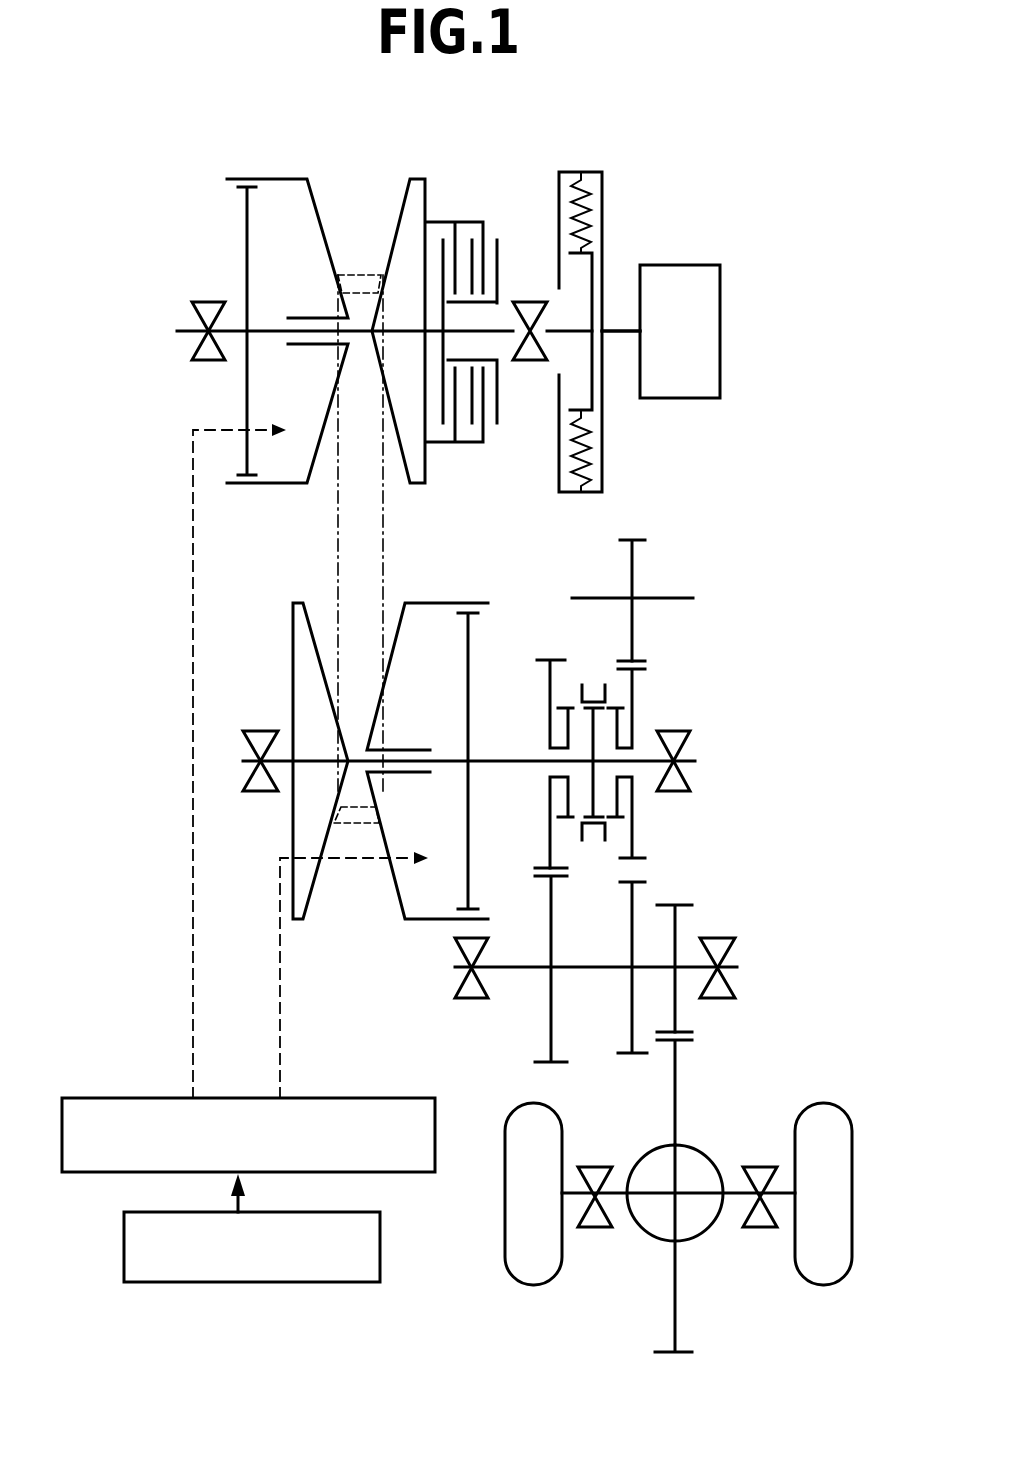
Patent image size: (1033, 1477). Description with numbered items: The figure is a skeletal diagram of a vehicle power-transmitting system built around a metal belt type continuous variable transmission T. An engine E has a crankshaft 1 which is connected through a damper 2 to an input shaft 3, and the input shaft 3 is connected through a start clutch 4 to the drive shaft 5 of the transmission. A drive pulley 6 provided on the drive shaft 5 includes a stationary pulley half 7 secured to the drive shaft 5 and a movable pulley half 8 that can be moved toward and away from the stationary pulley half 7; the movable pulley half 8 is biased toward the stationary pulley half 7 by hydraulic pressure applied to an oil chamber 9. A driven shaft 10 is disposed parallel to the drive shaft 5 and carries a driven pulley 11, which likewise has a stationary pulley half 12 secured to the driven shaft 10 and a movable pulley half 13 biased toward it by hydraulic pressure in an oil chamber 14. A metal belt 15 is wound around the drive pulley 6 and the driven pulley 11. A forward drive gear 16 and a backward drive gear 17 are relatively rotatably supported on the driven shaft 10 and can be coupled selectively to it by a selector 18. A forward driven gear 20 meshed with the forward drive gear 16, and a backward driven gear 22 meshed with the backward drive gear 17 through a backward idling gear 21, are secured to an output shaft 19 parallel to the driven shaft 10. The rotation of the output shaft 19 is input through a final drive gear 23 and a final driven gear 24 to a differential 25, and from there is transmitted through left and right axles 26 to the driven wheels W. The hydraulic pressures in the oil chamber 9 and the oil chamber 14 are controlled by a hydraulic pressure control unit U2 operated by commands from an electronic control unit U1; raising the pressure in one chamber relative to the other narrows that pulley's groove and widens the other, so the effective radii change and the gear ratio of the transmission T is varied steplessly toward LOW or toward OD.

The crankshaft 1 is at (617, 335).
The damper 2 is at (608, 218).
The input shaft 3 is at (550, 328).
The start clutch 4 is at (468, 214).
The drive shaft 5 is at (263, 330).
The drive pulley 6 is at (326, 305).
The stationary pulley half 7 is at (398, 312).
The movable pulley half 8 is at (313, 213).
The oil chamber 9 is at (283, 407).
The driven shaft 10 is at (526, 760).
The driven pulley 11 is at (360, 799).
The stationary pulley half 12 is at (293, 633).
The movable pulley half 13 is at (400, 630).
The oil chamber 14 is at (430, 844).
The metal belt 15 is at (383, 552).
The forward drive gear 16 is at (546, 657).
The backward drive gear 17 is at (645, 670).
The selector 18 is at (592, 842).
The output shaft 19 is at (577, 965).
The forward driven gear 20 is at (560, 1064).
The backward idling gear 21 is at (642, 537).
The backward driven gear 22 is at (625, 1056).
The final drive gear 23 is at (680, 903).
The final driven gear 24 is at (692, 1040).
The differential 25 is at (703, 1160).
The axle 26 is at (612, 1197).
The engine E is at (675, 342).
The metal belt type continuous variable transmission T is at (278, 542).
The driven wheel W is at (503, 1257).
The electronic control unit U1 is at (382, 1234).
The hydraulic pressure control unit U2 is at (437, 1122).